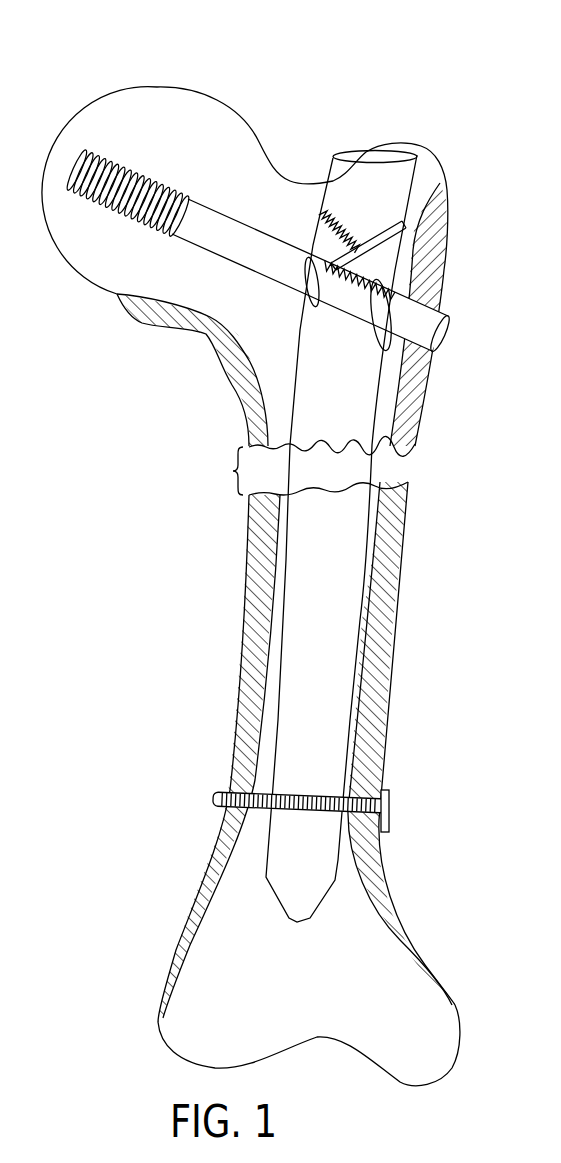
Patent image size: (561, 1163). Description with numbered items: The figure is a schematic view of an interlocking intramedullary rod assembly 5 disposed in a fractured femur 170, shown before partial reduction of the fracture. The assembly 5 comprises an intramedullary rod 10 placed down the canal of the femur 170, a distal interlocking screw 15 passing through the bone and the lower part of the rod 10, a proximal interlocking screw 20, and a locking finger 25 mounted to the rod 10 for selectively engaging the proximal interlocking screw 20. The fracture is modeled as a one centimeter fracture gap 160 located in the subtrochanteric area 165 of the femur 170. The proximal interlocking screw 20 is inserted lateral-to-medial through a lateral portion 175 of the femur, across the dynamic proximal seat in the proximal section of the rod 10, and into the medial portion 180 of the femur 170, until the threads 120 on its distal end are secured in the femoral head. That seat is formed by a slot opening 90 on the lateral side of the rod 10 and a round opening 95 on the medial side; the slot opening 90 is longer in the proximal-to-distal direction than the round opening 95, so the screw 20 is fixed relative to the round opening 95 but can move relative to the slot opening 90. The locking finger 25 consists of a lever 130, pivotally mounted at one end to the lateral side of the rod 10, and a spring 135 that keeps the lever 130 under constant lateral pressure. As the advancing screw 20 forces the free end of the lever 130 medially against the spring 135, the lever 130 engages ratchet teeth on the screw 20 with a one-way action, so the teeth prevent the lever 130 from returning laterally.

The interlocking intramedullary rod assembly 5 is at (395, 463).
The intramedullary rod 10 is at (343, 408).
The distal interlocking screw 15 is at (396, 792).
The proximal interlocking screw 20 is at (455, 312).
The locking finger 25 is at (376, 217).
The slot opening 90 is at (388, 347).
The round opening 95 is at (307, 293).
The threads 120 is at (122, 217).
The lever 130 is at (382, 258).
The spring 135 is at (343, 213).
The fracture gap 160 is at (219, 471).
The subtrochanteric area 165 is at (278, 410).
The femur 170 is at (172, 560).
The lateral portion 175 is at (440, 263).
The medial portion 180 is at (228, 292).